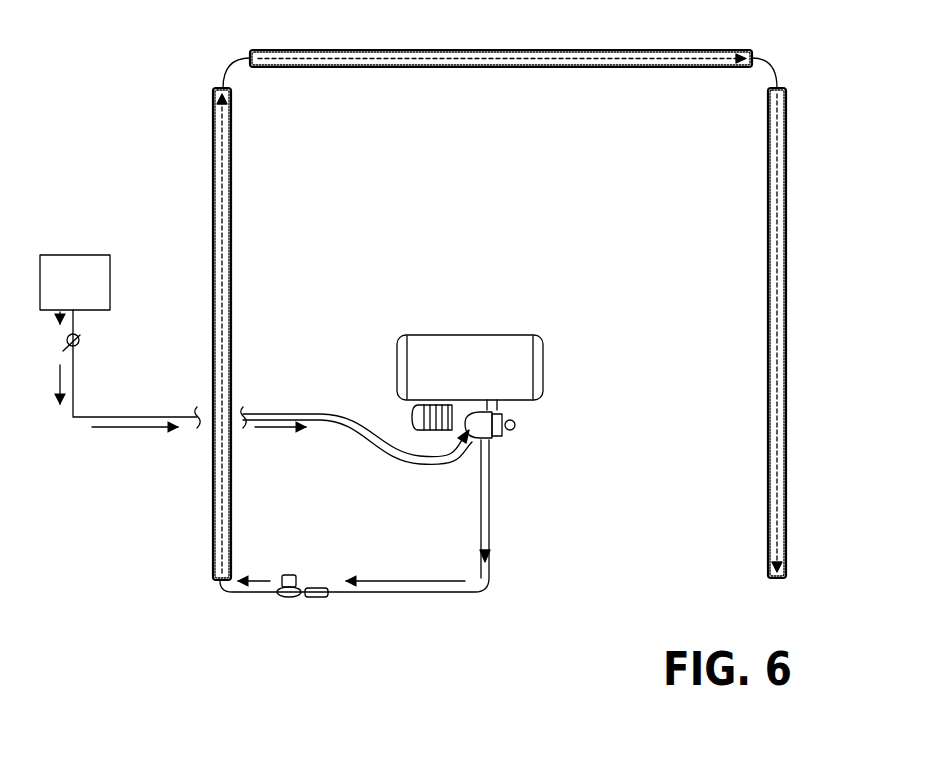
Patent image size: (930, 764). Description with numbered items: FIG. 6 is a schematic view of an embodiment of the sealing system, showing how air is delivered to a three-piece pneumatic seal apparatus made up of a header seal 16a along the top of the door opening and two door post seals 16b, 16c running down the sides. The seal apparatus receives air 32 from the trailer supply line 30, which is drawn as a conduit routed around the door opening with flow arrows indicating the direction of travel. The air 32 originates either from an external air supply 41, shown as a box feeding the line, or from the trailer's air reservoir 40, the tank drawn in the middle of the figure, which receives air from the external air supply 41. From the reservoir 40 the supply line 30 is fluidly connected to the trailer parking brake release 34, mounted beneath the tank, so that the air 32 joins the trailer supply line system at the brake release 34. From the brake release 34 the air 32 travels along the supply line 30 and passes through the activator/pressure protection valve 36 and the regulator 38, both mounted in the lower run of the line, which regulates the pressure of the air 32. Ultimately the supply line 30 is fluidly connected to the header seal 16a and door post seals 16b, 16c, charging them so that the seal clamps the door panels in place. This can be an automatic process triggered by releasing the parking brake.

The header seal 16a is at (478, 50).
The door post seal 16b is at (213, 290).
The door post seal 16c is at (786, 320).
The air 32 is at (328, 51).
The trailer supply line 30 is at (73, 390).
The trailer parking brake release 34 is at (518, 437).
The activator/pressure protection valve 36 is at (318, 598).
The regulator 38 is at (288, 598).
The air reservoir 40 is at (518, 334).
The external air supply 41 is at (88, 296).